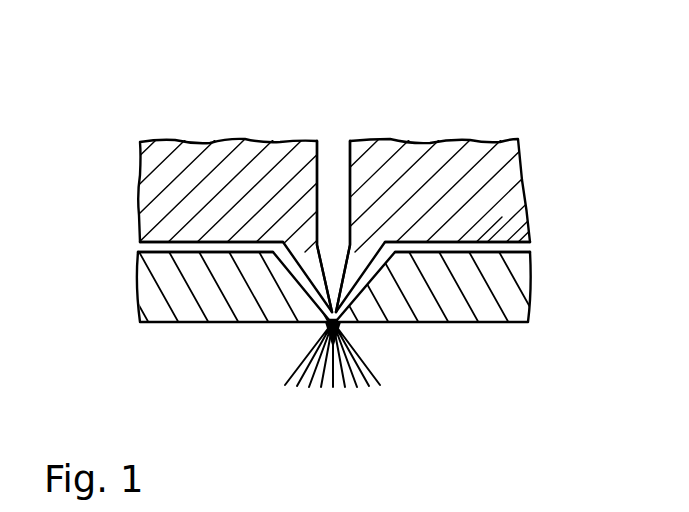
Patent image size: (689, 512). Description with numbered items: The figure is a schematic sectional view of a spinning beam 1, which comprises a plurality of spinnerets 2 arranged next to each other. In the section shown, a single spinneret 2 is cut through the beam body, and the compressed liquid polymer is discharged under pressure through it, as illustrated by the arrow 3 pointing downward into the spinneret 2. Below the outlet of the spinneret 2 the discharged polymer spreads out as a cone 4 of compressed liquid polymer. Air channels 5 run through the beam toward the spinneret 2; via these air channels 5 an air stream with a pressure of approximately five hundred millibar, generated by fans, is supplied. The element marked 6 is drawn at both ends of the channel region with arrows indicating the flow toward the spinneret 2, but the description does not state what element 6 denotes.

The spinning beam 1 is at (440, 102).
The spinneret 2 is at (357, 336).
The arrow 3 is at (333, 152).
The cone 4 is at (290, 381).
The air channel 5 is at (527, 282).
The channel 6 is at (155, 247).